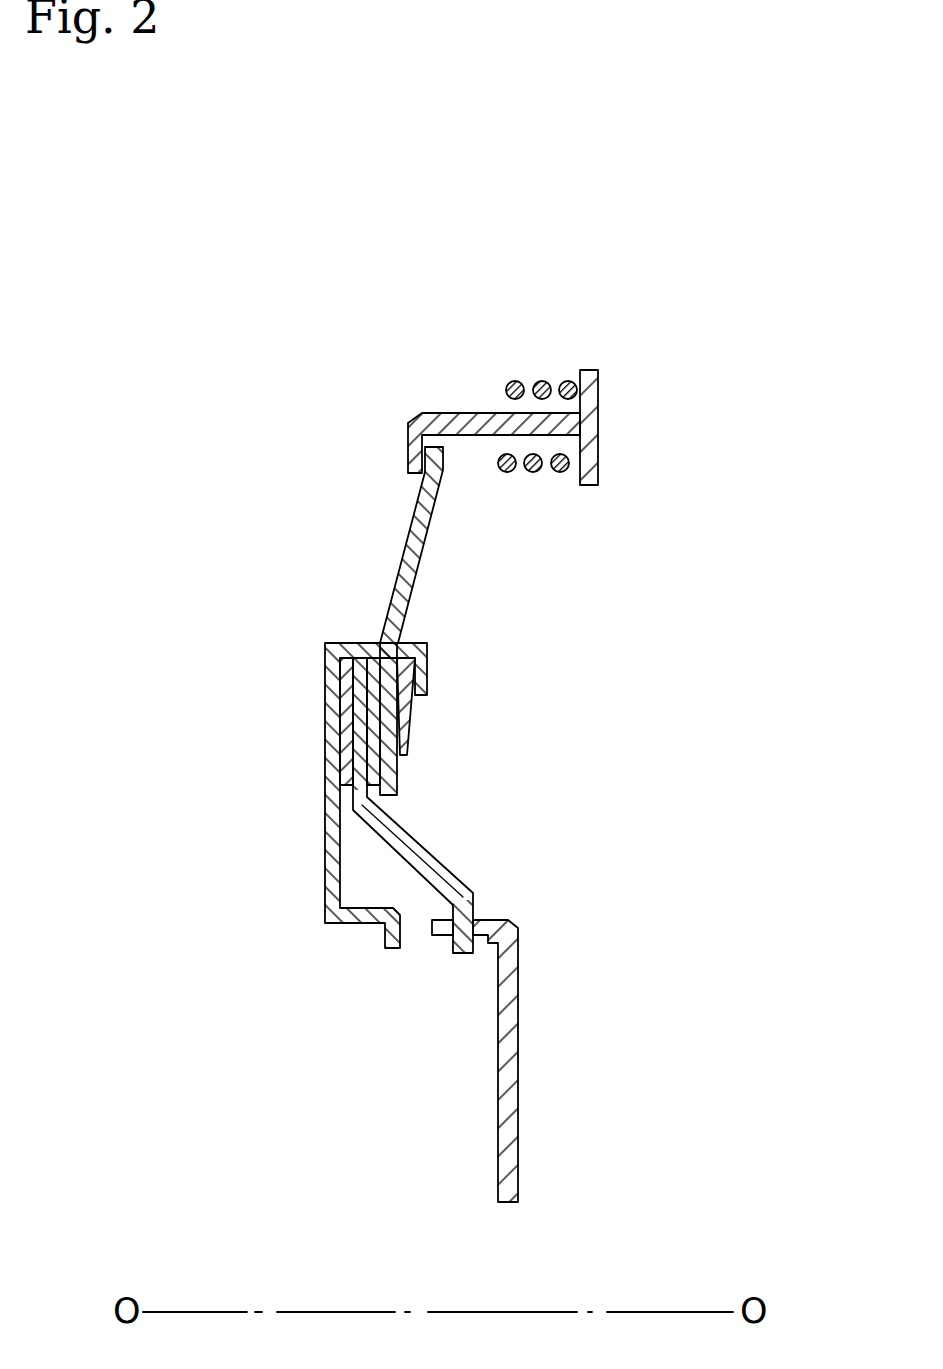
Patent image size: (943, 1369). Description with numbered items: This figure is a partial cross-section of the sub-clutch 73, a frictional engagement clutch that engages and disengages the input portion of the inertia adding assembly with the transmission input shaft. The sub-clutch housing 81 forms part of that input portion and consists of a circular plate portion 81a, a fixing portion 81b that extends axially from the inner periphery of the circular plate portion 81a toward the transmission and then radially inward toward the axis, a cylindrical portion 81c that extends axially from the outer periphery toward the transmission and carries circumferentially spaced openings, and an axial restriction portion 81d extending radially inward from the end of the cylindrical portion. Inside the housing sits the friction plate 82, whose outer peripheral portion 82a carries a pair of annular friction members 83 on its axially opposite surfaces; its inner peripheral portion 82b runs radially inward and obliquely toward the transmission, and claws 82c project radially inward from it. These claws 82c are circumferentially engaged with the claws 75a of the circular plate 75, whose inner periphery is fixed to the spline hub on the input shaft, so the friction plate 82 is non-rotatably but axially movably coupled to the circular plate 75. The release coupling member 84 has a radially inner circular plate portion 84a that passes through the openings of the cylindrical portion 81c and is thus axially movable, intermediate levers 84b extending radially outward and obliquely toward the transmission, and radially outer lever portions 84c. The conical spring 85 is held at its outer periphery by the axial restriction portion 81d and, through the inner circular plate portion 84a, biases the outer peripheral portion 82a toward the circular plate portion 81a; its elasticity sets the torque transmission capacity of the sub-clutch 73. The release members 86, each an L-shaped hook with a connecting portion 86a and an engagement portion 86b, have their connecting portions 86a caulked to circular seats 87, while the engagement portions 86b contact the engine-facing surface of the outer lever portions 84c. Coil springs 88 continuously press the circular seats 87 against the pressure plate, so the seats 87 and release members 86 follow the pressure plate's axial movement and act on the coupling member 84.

The sub-clutch 73 is at (600, 311).
The circular plate 75 is at (521, 1055).
The claws 75a is at (442, 937).
The sub-clutch housing 81 is at (323, 808).
The circular plate portion 81a is at (331, 860).
The fixing portion 81b is at (357, 915).
The cylindrical portion 81c is at (360, 650).
The axial restriction portion 81d is at (423, 668).
The friction plate 82 is at (473, 884).
The outer peripheral portion 82a is at (345, 680).
The inner peripheral portion 82b is at (433, 872).
The claws 82c is at (465, 956).
The annular friction members 83 is at (355, 678).
The release coupling member 84 is at (430, 546).
The radially inner circular plate portion 84a is at (392, 778).
The intermediate levers 84b is at (409, 560).
The radially outer lever portions 84c is at (437, 460).
The conical spring 85 is at (413, 718).
The release members 86 is at (441, 408).
The connecting portion 86a is at (493, 423).
The engagement portion 86b is at (411, 453).
The circular seats 87 is at (596, 470).
The coil springs 88 is at (515, 381).